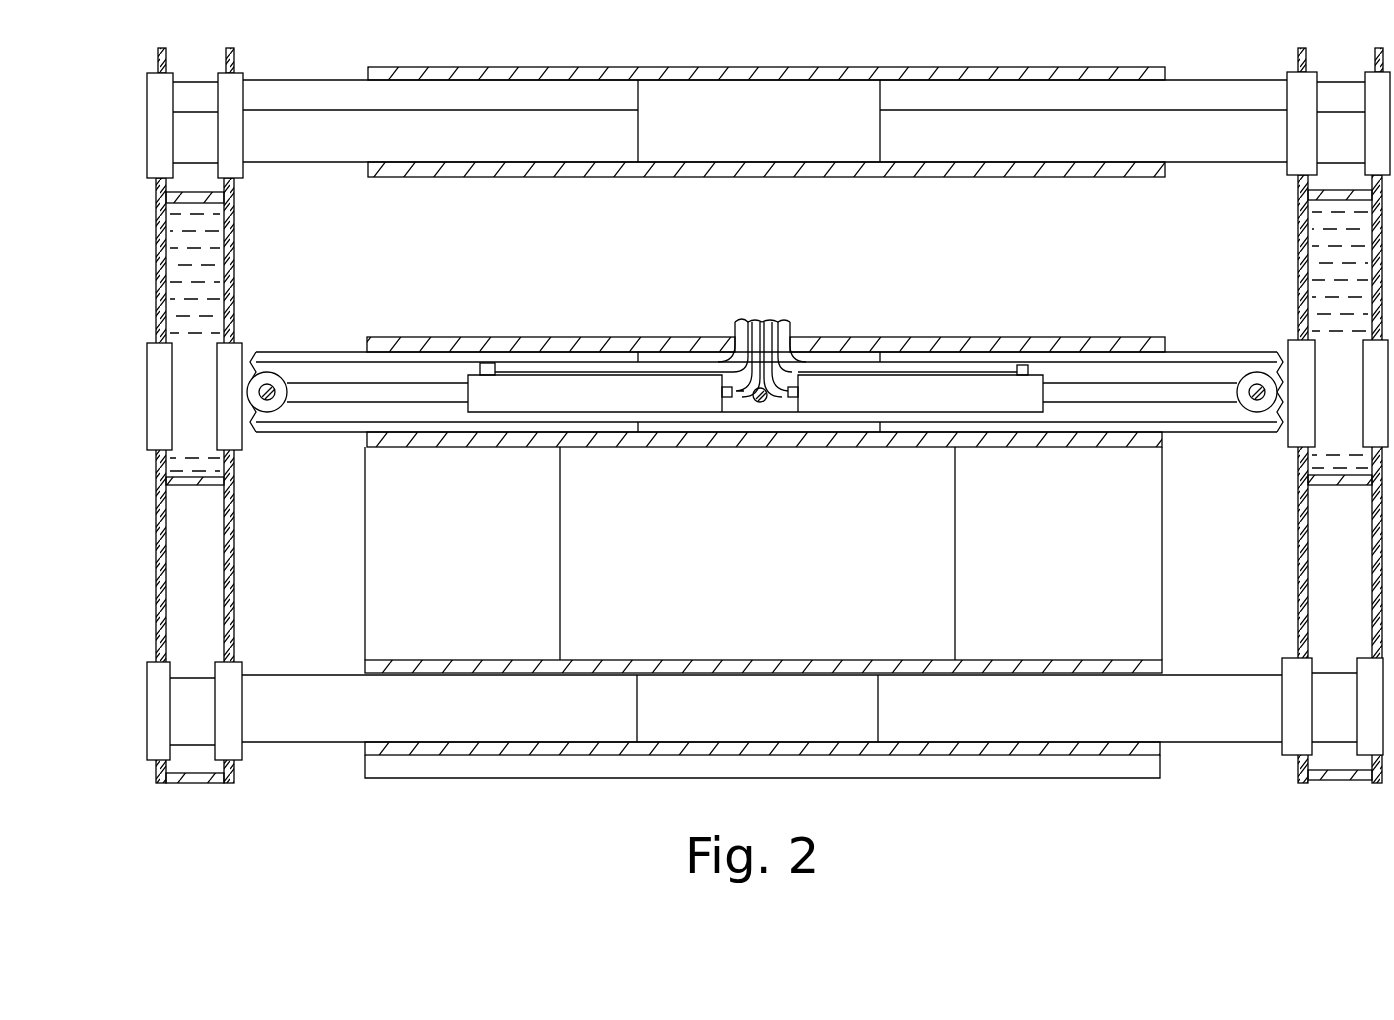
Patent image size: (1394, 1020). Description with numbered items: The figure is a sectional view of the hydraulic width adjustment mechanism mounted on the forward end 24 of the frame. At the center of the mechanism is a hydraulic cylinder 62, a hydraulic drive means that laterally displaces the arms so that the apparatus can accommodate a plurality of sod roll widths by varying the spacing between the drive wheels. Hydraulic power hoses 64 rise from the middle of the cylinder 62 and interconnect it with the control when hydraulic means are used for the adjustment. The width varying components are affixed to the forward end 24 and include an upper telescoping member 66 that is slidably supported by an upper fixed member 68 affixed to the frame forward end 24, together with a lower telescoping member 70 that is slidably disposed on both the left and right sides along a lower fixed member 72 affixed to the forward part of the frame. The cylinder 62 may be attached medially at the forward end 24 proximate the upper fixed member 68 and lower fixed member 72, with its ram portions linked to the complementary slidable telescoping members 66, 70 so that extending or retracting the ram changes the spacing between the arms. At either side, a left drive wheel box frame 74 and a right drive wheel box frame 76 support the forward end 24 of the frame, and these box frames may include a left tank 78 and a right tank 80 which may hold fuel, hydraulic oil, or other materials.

The forward end 24 is at (1155, 482).
The hydraulic cylinder 62 is at (883, 390).
The hydraulic power hoses 64 is at (736, 320).
The upper telescoping member 66 is at (1202, 157).
The upper fixed member 68 is at (1098, 168).
The lower telescoping member 70 is at (1185, 725).
The lower fixed member 72 is at (1105, 750).
The left drive wheel box frame 74 is at (1300, 543).
The right drive wheel box frame 76 is at (230, 594).
The left tank 78 is at (1317, 248).
The right tank 80 is at (215, 258).